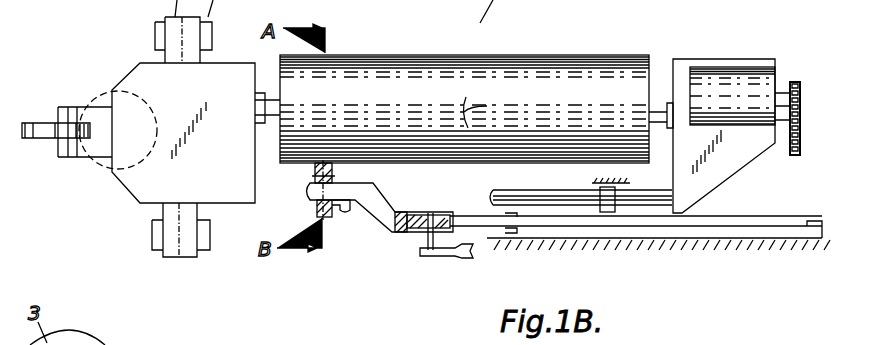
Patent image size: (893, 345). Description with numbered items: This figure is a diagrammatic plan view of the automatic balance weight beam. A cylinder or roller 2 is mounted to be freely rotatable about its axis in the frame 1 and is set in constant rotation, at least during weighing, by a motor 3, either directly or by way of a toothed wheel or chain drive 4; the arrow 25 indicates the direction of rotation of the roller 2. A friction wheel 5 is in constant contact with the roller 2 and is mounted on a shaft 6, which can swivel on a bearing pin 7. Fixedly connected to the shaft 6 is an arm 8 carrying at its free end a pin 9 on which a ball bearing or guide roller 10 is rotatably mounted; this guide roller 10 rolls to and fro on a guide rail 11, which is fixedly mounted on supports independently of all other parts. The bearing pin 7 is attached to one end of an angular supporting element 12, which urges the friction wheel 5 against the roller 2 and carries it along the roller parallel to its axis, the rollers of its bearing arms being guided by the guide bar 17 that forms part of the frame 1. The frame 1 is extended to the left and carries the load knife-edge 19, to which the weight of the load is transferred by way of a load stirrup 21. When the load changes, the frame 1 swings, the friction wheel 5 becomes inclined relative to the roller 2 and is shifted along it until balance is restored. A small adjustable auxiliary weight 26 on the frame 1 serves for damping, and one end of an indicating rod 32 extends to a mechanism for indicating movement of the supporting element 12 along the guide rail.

The frame 1 is at (138, 200).
The roller 2 is at (527, 85).
The motor 3 is at (703, 82).
The toothed wheel or chain drive 4 is at (800, 115).
The friction wheel 5 is at (318, 207).
The shaft 6 is at (305, 190).
The bearing pin 7 is at (332, 180).
The arm 8 is at (400, 213).
The pin 9 is at (432, 213).
The guide roller 10 is at (450, 220).
The guide rail 11 is at (748, 227).
The angular supporting element 12 is at (345, 212).
The guide bar 17 is at (545, 203).
The load knife-edge 19 is at (68, 105).
The load stirrup 21 is at (28, 123).
The direction of rotation 25 is at (487, 112).
The auxiliary weight 26 is at (97, 168).
The indicating rod 32 is at (460, 258).